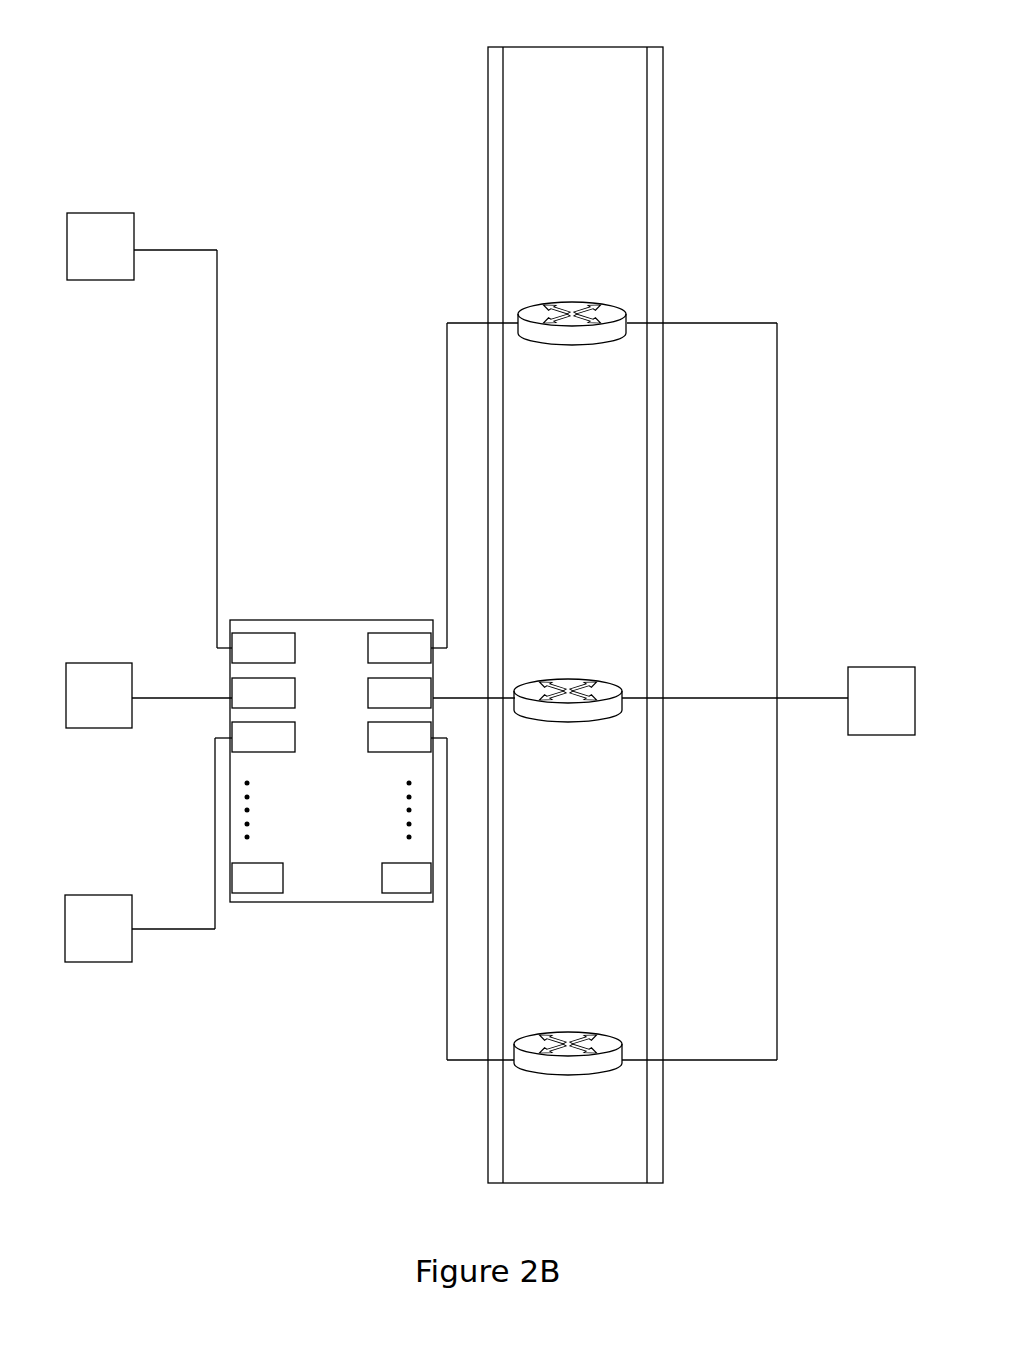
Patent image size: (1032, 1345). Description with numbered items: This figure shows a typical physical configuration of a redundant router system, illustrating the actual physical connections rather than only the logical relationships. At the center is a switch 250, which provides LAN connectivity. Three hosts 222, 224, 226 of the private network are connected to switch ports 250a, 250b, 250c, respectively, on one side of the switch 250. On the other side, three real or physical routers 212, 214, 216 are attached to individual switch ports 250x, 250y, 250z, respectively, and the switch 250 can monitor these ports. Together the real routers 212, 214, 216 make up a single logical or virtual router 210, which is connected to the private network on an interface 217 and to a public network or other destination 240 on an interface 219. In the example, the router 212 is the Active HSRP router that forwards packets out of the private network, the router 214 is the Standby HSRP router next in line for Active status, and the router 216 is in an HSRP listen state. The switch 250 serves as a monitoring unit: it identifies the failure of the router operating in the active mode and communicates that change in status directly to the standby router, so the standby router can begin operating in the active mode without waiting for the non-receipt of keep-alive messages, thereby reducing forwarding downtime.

The virtual router 210 is at (630, 47).
The router 212 is at (574, 301).
The router 214 is at (570, 678).
The router 216 is at (570, 1031).
The interface 217 is at (488, 207).
The interface 219 is at (663, 172).
The host 222 is at (121, 262).
The host 224 is at (120, 708).
The host 226 is at (119, 942).
The destination 240 is at (902, 711).
The switch 250 is at (348, 782).
The switch port 250a is at (290, 661).
The switch port 250b is at (290, 706).
The switch port 250c is at (290, 750).
The switch port 250x is at (425, 661).
The switch port 250y is at (425, 706).
The switch port 250z is at (425, 750).